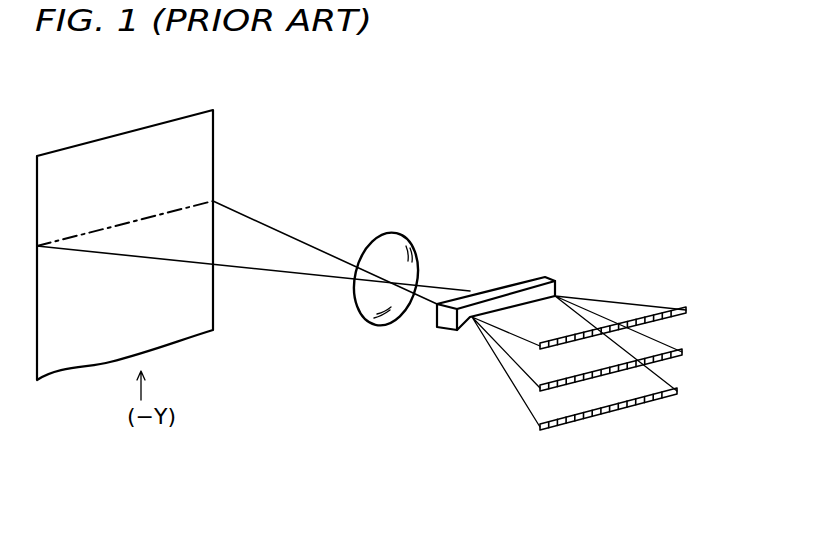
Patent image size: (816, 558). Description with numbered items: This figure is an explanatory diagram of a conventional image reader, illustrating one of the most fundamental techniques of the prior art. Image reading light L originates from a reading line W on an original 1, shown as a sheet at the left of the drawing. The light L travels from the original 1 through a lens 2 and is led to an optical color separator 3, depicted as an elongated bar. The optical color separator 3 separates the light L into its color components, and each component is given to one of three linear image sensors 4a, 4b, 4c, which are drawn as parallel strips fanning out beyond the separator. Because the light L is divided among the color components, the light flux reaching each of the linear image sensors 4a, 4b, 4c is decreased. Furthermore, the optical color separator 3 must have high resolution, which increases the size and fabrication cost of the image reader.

The original 1 is at (213, 133).
The reading line W is at (122, 224).
The image reading light L is at (228, 207).
The lens 2 is at (400, 238).
The optical color separator 3 is at (532, 280).
The linear image sensor 4a is at (552, 349).
The linear image sensor 4b is at (558, 389).
The linear image sensor 4c is at (558, 427).